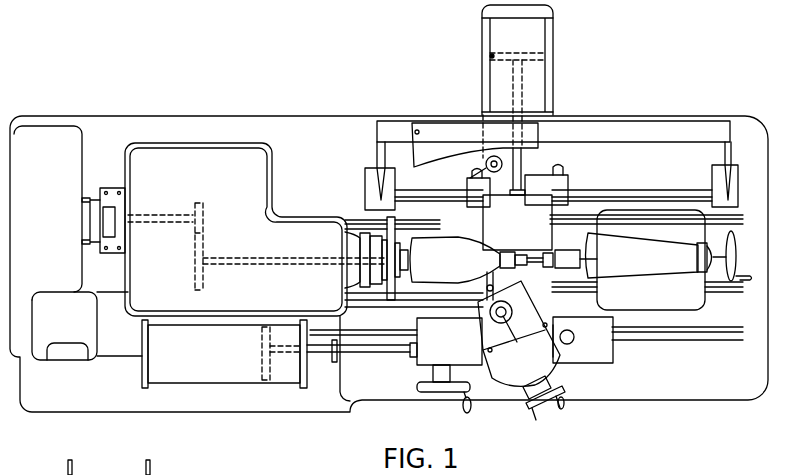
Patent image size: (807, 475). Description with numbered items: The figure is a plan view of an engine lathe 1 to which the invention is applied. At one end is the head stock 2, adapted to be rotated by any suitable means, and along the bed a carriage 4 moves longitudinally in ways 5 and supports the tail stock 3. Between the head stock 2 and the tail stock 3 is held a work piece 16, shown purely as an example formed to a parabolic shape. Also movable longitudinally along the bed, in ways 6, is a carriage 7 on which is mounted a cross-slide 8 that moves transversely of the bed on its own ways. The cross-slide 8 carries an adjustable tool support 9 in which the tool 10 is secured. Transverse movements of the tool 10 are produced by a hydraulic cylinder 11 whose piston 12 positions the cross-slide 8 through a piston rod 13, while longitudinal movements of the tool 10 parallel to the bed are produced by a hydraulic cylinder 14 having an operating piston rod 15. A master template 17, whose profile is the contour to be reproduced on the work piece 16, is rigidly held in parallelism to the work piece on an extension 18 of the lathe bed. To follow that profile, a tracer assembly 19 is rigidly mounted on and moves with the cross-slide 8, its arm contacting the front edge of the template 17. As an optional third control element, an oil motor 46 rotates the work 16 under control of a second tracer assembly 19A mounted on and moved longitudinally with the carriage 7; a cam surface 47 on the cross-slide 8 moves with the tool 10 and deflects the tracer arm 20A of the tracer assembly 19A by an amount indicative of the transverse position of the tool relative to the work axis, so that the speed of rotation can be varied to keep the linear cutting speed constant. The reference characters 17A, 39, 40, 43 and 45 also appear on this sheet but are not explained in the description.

The engine lathe 1 is at (101, 117).
The head stock 2 is at (395, 300).
The tail stock 3 is at (558, 266).
The carriage 4 is at (688, 303).
The ways 5 is at (737, 215).
The ways 6 is at (660, 195).
The carriage 7 is at (461, 353).
The cross-slide 8 is at (527, 228).
The adjustable tool support 9 is at (536, 369).
The tool 10 is at (487, 292).
The hydraulic cylinder 11 is at (526, 47).
The piston 12 is at (506, 66).
The piston rod 13 is at (522, 178).
The hydraulic cylinder 14 is at (224, 366).
The operating piston rod 15 is at (396, 357).
The work piece 16 is at (468, 260).
The master template 17 is at (461, 153).
The pivot pin 17A is at (416, 129).
The extension 18 is at (645, 144).
The tracer assembly 19 is at (470, 185).
The tracer assembly 19A is at (569, 333).
The tracer arm 20A is at (570, 341).
The oil motor 46 is at (118, 188).
The cam surface 47 is at (566, 354).
The part (partial) 39 is at (56, 474).
The part (partial) 40 is at (141, 474).
The pin (partial) 43 is at (150, 463).
The pin (partial) 45 is at (72, 464).